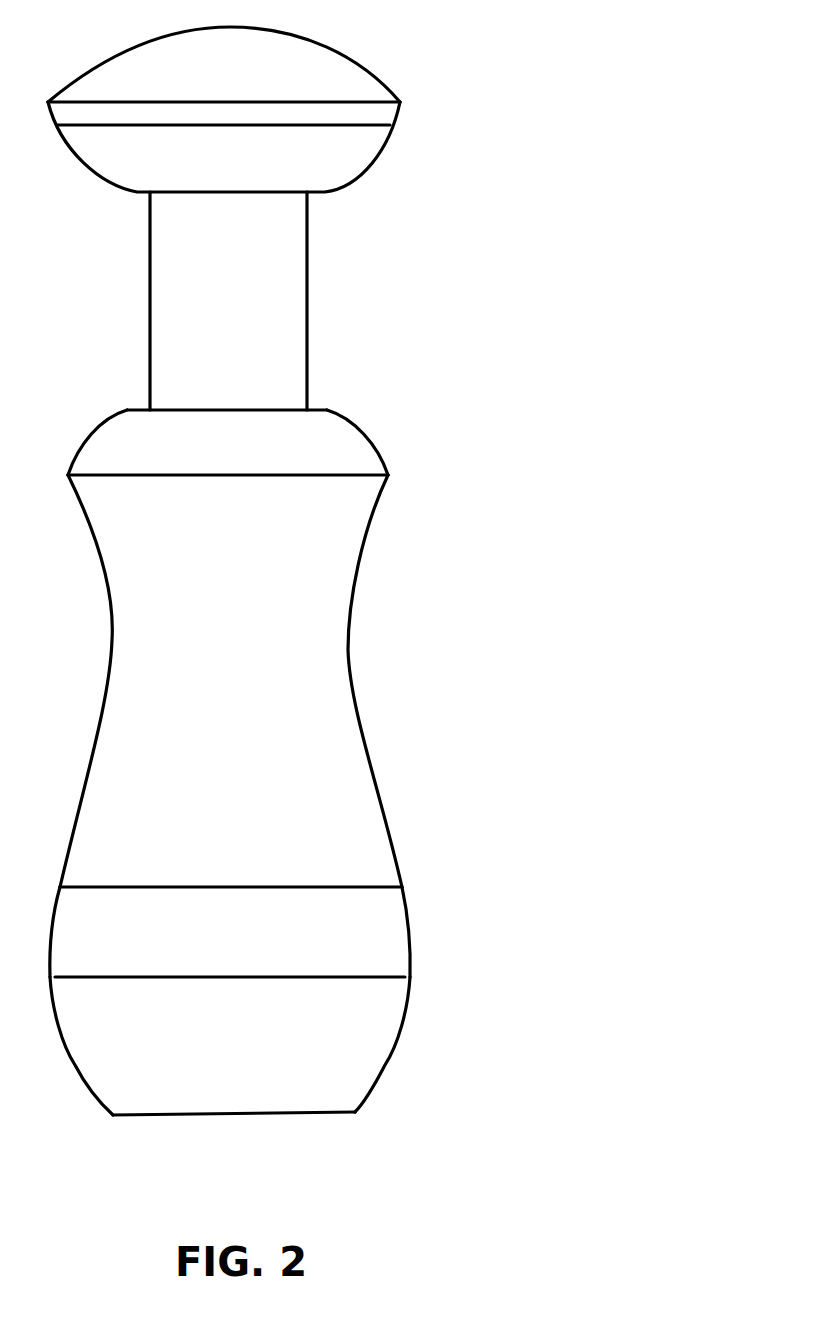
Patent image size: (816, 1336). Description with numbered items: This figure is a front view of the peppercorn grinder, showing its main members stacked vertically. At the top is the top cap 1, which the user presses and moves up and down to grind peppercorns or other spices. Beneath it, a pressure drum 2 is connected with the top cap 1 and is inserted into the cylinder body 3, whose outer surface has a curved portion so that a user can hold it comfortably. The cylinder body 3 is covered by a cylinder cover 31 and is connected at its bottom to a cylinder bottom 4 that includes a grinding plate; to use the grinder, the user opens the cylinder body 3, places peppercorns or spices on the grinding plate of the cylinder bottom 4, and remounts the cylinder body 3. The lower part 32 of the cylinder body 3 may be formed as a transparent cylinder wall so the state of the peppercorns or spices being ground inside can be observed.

The top cap 1 is at (333, 76).
The pressure drum 2 is at (287, 295).
The cylinder body 3 is at (318, 683).
The cylinder cover 31 is at (337, 450).
The lower part of the cylinder body 32 is at (377, 927).
The cylinder bottom 4 is at (360, 1060).